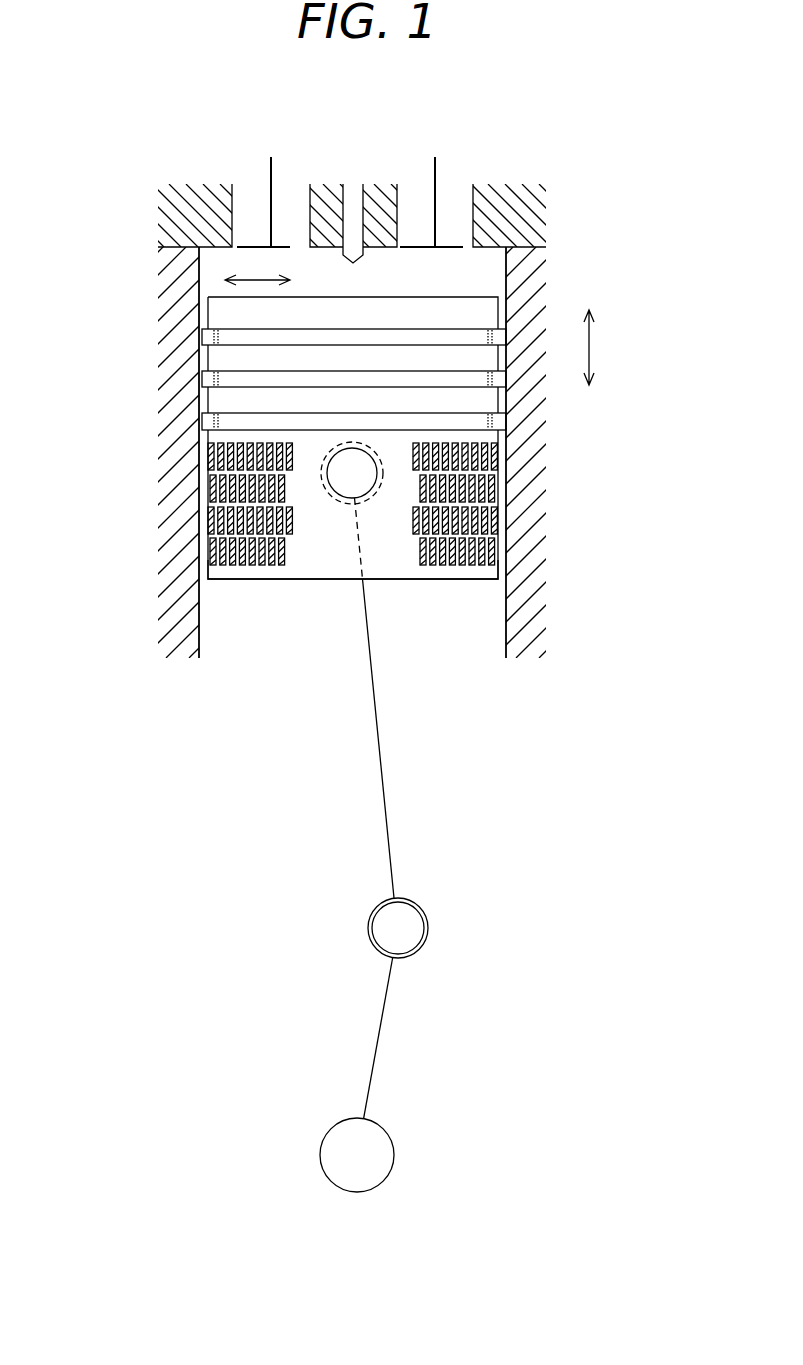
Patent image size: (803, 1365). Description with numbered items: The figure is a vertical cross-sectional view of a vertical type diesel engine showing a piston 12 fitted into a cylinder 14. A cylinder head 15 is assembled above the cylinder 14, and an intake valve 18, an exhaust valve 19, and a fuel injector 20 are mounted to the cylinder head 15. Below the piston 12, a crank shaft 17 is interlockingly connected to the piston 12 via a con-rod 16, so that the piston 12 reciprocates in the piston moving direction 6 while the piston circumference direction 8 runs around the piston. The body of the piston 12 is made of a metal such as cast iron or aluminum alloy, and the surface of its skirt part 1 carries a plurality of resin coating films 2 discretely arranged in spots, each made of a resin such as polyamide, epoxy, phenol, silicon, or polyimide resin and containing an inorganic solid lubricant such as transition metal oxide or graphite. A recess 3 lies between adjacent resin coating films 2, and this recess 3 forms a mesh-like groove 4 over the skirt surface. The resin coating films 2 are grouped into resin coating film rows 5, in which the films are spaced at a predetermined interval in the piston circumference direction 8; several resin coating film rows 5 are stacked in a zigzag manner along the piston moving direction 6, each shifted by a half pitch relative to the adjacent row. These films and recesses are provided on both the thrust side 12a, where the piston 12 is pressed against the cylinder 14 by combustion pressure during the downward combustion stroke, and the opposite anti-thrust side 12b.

The skirt part 1 is at (304, 569).
The resin coating film 2 is at (204, 523).
The recess 3 is at (426, 430).
The mesh-like groove 4 is at (545, 429).
The resin coating film row 5 is at (193, 461).
The piston moving direction 6 is at (592, 347).
The piston circumference direction 8 is at (237, 263).
The piston 12 is at (446, 596).
The thrust side 12a is at (194, 542).
The anti-thrust side 12b is at (513, 576).
The cylinder 14 is at (543, 483).
The cylinder head 15 is at (525, 202).
The con-rod 16 is at (380, 798).
The crank shaft 17 is at (378, 1023).
The intake valve 18 is at (241, 244).
The exhaust valve 19 is at (416, 246).
The fuel injector 20 is at (357, 197).